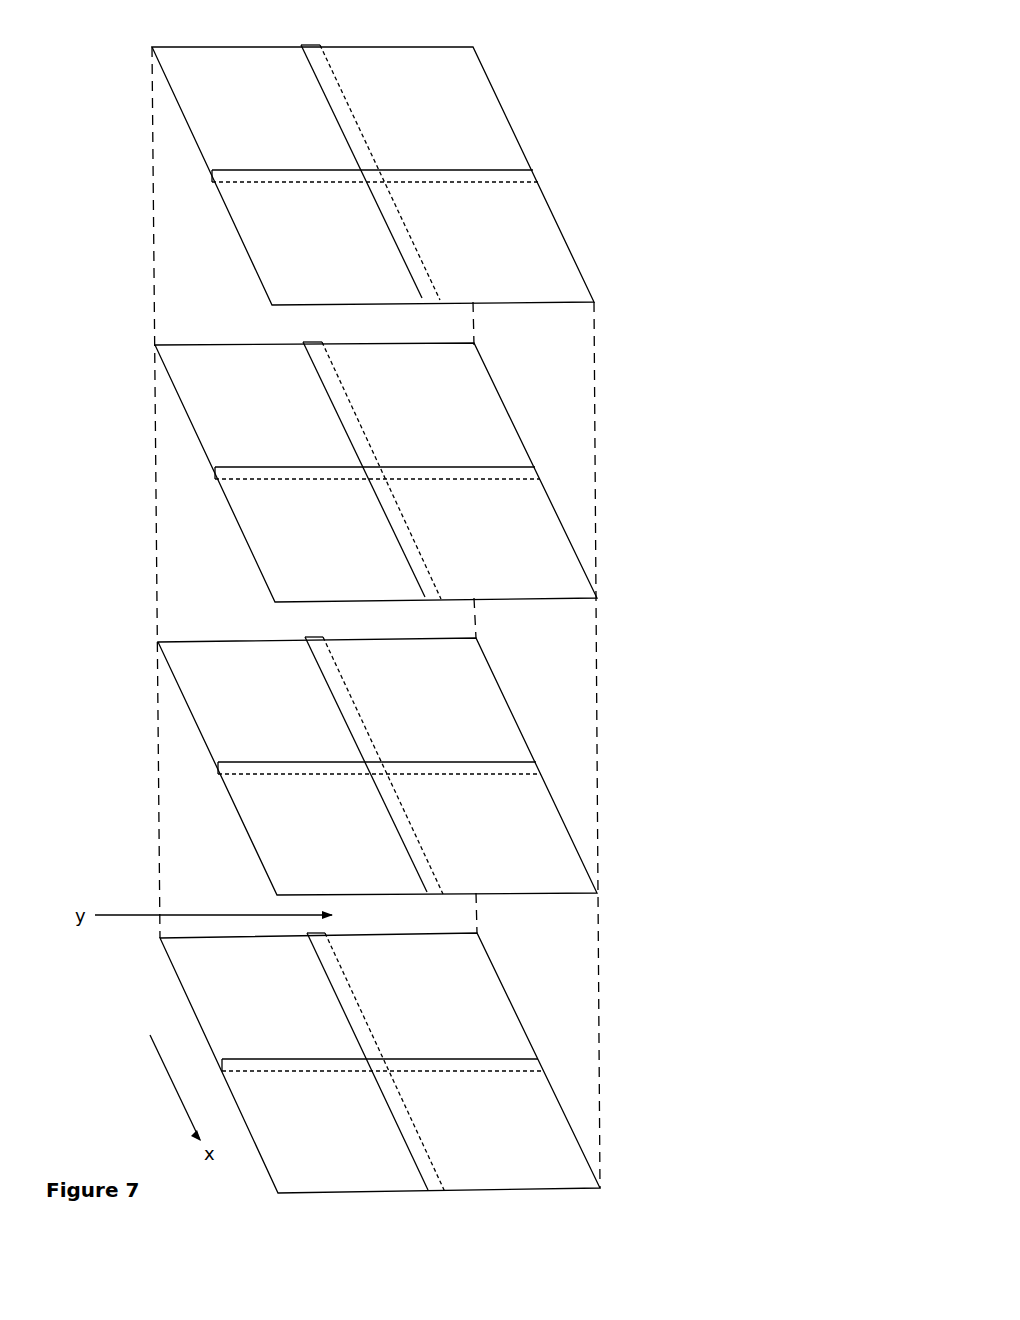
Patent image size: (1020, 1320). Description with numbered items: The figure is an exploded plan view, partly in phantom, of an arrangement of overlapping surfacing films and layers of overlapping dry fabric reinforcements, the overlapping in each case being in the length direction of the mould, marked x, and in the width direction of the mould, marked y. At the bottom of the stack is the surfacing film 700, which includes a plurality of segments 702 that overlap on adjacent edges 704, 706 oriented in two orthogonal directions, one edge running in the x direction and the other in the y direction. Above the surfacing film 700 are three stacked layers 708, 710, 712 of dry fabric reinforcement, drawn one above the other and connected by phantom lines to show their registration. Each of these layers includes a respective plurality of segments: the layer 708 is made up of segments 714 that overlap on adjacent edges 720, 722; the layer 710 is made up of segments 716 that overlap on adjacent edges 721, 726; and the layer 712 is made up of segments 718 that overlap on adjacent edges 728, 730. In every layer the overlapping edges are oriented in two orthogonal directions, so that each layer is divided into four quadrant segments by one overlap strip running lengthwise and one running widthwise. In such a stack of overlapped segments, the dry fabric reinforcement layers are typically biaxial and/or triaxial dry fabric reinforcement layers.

The surfacing film 700 is at (374, 1063).
The segments 702 is at (380, 1063).
The adjacent edge 704 is at (327, 962).
The adjacent edge 706 is at (533, 1063).
The stacked layer of dry fabric reinforcement 708 is at (373, 766).
The segments 714 is at (377, 766).
The adjacent edge 720 is at (326, 665).
The adjacent edge 722 is at (531, 766).
The stacked layer of dry fabric reinforcement 710 is at (372, 472).
The segments 716 is at (376, 472).
The vertical strip of third layer 721 is at (323, 368).
The adjacent edge 726 is at (530, 470).
The stacked layer of dry fabric reinforcement 712 is at (369, 175).
The segments 718 is at (373, 176).
The adjacent edge 728 is at (320, 71).
The adjacent edge 730 is at (527, 172).